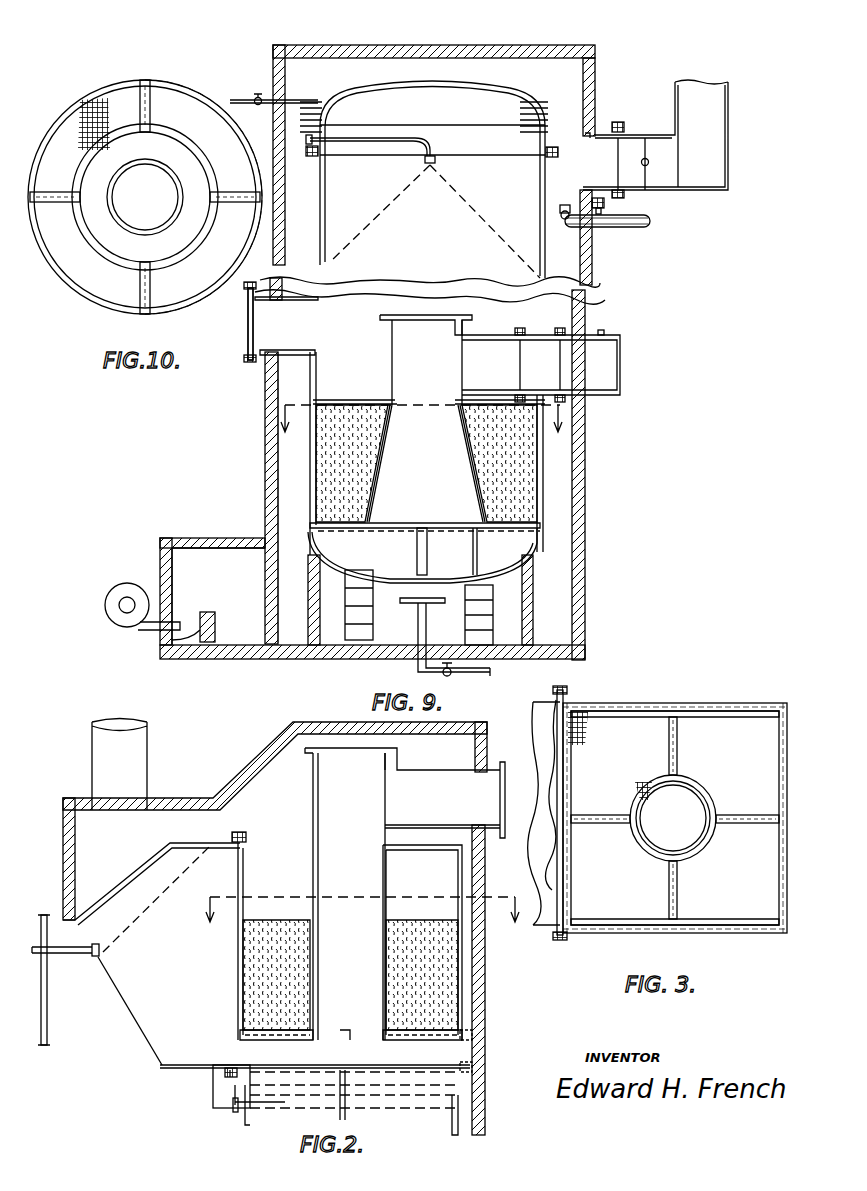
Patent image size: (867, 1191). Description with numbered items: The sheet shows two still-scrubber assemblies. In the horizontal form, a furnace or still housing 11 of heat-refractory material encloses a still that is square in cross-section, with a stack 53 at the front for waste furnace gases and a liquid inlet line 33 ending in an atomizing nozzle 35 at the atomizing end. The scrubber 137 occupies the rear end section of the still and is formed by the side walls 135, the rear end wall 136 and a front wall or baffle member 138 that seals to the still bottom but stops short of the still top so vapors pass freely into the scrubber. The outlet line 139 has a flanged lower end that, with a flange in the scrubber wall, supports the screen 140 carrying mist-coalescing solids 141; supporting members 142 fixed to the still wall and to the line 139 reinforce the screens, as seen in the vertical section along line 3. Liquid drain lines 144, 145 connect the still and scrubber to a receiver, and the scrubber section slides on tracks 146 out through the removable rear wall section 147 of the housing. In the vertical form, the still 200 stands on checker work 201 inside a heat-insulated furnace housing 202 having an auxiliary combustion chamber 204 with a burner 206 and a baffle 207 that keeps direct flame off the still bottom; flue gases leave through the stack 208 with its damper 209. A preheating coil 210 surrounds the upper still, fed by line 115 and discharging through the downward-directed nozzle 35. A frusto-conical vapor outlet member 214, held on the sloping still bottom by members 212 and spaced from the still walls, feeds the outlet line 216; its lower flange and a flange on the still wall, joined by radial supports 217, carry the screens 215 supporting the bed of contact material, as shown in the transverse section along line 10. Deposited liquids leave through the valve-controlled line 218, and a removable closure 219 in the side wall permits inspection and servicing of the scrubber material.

In FIG. 9, the section line 10— 10 is at (423, 427).
In FIG. 2, the furnace or still housing 11 is at (63, 840).
In FIG. 2, the liquid inlet line 33 is at (60, 945).
In FIG. 9, the atomizing nozzle 35 is at (432, 158).
In FIG. 2, the atomizing nozzle 35 is at (97, 944).
In FIG. 2, the stack 53 is at (92, 758).
In FIG. 9, the line 115 is at (255, 96).
In FIG. 3, the side walls 135 is at (655, 709).
In FIG. 2, the rear end wall 136 is at (460, 965).
In FIG. 3, the rear end wall 136 is at (788, 718).
In FIG. 2, the scrubber 137 is at (302, 920).
In FIG. 2, the front wall or baffle member 138 is at (240, 978).
In FIG. 3, the front wall or baffle member 138 is at (558, 852).
In FIG. 2, the outlet line 139 is at (314, 994).
In FIG. 3, the outlet line 139 is at (680, 785).
In FIG. 2, the screen 140 is at (415, 1038).
In FIG. 3, the screen 140 is at (590, 725).
In FIG. 2, the mist-coalescing solids 141 is at (430, 1008).
In FIG. 2, the supporting members 142 is at (308, 1052).
In FIG. 3, the supporting members 142 is at (678, 904).
In FIG. 2, the liquid drain line 144 is at (213, 1090).
In FIG. 2, the liquid drain line 145 is at (345, 1085).
In FIG. 2, the tracks 146 is at (236, 1112).
In FIG. 2, the removable rear wall section 147 is at (486, 992).
In FIG. 10, the still 200 is at (160, 306).
In FIG. 9, the still 200 is at (586, 300).
In FIG. 9, the checker work 201 is at (534, 642).
In FIG. 9, the furnace housing 202 is at (268, 520).
In FIG. 9, the auxiliary combustion chamber 204 is at (215, 556).
In FIG. 9, the burner 206 is at (106, 606).
In FIG. 9, the baffle 207 is at (203, 612).
In FIG. 9, the stack 208 is at (730, 165).
In FIG. 9, the damper 209 is at (646, 180).
In FIG. 9, the preheating coil 210 is at (556, 103).
In FIG. 9, the supporting members 212 is at (478, 552).
In FIG. 10, the vapor outlet member 214 is at (145, 160).
In FIG. 9, the vapor outlet member 214 is at (470, 518).
In FIG. 10, the screens 215 is at (88, 142).
In FIG. 9, the screens 215 is at (330, 520).
In FIG. 9, the outlet line 216 is at (620, 378).
In FIG. 10, the radial supports 217 is at (138, 290).
In FIG. 9, the radial supports 217 is at (478, 525).
In FIG. 9, the valve-controlled line 218 is at (402, 672).
In FIG. 9, the removable closure 219 is at (248, 340).
In FIG. 2, the section line 3— 3 is at (361, 920).